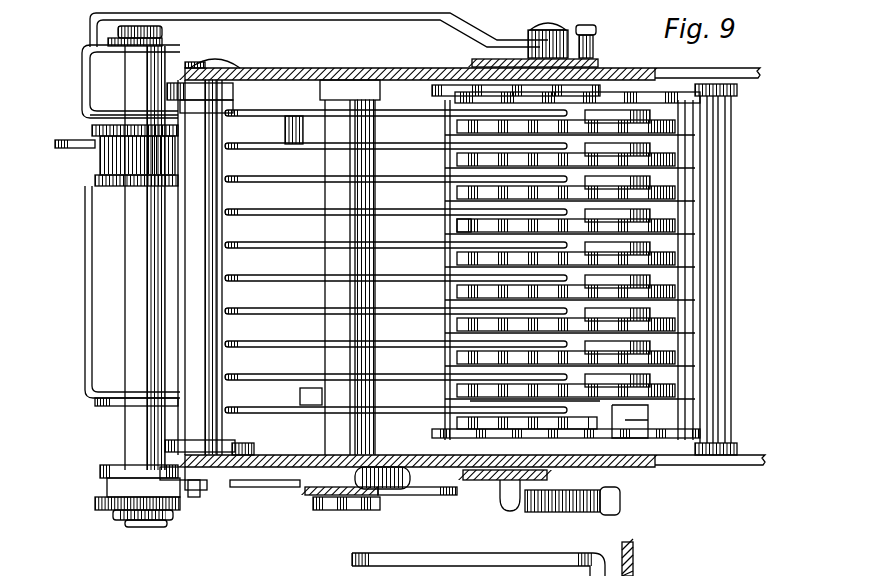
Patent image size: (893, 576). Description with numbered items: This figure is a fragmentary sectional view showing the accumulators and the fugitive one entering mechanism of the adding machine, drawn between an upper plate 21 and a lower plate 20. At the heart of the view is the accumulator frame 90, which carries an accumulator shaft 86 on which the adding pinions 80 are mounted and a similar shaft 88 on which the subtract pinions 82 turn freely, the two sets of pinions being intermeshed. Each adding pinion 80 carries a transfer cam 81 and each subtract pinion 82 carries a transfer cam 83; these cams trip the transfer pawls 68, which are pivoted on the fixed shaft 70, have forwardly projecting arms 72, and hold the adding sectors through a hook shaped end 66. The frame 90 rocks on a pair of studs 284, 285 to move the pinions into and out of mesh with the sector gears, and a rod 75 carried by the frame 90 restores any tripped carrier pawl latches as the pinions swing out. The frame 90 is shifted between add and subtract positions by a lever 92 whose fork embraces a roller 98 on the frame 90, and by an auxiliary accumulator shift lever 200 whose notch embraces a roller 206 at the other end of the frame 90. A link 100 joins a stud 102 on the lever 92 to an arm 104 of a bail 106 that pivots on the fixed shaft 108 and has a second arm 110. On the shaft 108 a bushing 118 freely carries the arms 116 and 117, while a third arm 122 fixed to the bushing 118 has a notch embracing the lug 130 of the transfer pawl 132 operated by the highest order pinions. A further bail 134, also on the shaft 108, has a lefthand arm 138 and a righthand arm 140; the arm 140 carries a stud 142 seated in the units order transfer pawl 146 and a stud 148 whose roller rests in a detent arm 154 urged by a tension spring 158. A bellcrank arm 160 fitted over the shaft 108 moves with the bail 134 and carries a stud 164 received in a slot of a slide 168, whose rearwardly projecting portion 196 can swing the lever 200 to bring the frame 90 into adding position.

The lower base plate 20 is at (392, 455).
The upper base plate 21 is at (405, 68).
The hook shaped end 66 is at (585, 399).
The transfer pawl 68 is at (400, 208).
The fixed shaft 70 is at (362, 329).
The forwardly projecting arms 72 is at (262, 208).
The rod 75 is at (185, 316).
The accumulator adding pinions 80 is at (463, 192).
The transfer cam 81 is at (493, 243).
The subtract pinions 82 is at (673, 190).
The transfer cam 83 is at (647, 113).
The accumulator shaft 86 is at (499, 423).
The shaft 88 is at (633, 424).
The accumulator frame 90 is at (700, 99).
The lever 92 is at (598, 62).
The roller 98 is at (594, 36).
The link 100 is at (262, 23).
The stud 102 is at (549, 25).
The arm 104 is at (128, 46).
The bail 106 is at (75, 50).
The fixed shaft 108 is at (146, 27).
The second arm 110 is at (107, 115).
The arm 116 is at (107, 152).
The arm 117 is at (92, 131).
The bushing 118 is at (130, 178).
The third arm 122 is at (245, 133).
The lug 130 is at (235, 105).
The transfer pawl 132 is at (415, 110).
The bail 134 is at (79, 240).
The lefthand arm 138 is at (222, 186).
The righthand arm 140 is at (118, 400).
The stud 142 is at (308, 400).
The transfer pawl 146 is at (398, 413).
The stud 148 is at (172, 440).
The detent arm 154 is at (247, 482).
The tension spring 158 is at (428, 470).
The bellcrank arm 160 is at (98, 500).
The stud 164 is at (300, 498).
The slide 168 is at (345, 511).
The rearwardly projecting portion 196 is at (490, 481).
The auxiliary accumulator shift lever 200 is at (503, 500).
The roller 206 is at (575, 511).
The stud 284 is at (240, 64).
The stud 285 is at (244, 446).